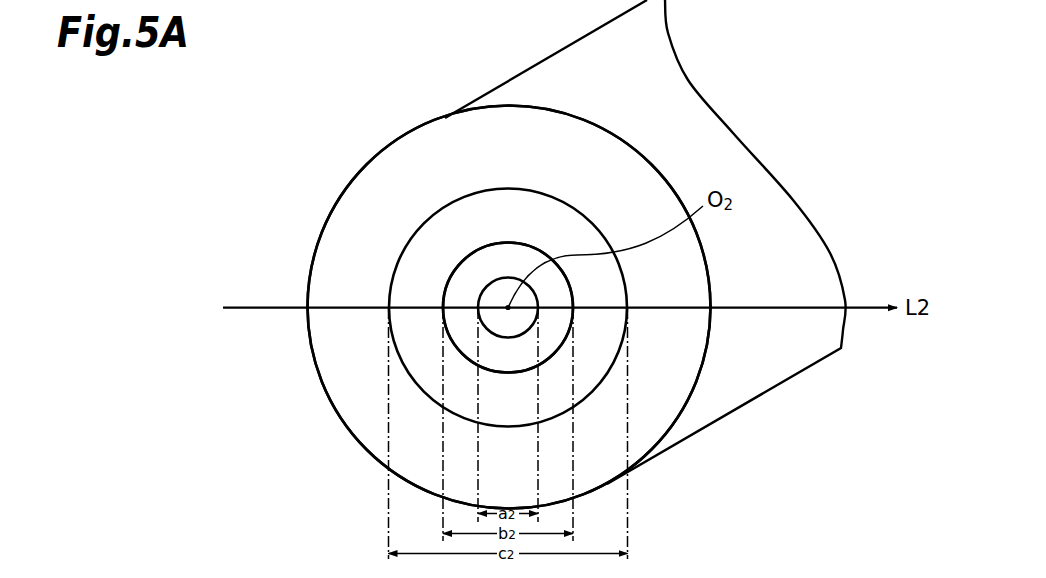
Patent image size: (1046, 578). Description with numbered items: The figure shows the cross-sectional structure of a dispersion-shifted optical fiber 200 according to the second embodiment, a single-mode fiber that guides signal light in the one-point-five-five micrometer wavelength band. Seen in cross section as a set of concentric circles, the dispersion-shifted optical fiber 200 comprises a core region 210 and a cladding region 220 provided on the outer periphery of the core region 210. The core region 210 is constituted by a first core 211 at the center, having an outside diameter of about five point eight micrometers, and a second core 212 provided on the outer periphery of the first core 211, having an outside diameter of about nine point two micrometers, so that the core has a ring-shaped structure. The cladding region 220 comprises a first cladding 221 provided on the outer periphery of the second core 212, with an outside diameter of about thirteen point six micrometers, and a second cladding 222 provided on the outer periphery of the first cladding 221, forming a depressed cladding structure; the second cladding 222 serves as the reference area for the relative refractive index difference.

The dispersion-shifted optical fiber 200 is at (790, 257).
The core region 210 is at (252, 185).
The first core 211 is at (497, 297).
The second core 212 is at (483, 268).
The cladding region 220 is at (773, 440).
The first cladding 221 is at (583, 367).
The second cladding 222 is at (633, 445).